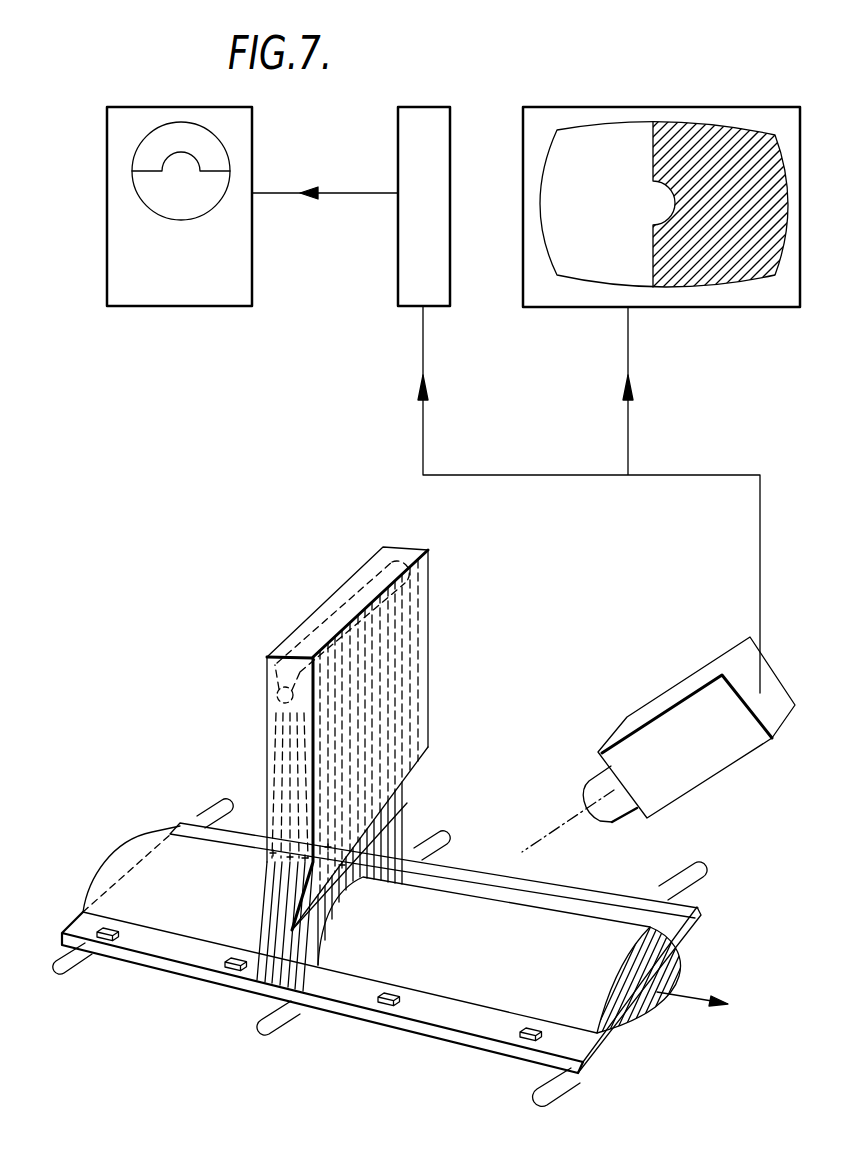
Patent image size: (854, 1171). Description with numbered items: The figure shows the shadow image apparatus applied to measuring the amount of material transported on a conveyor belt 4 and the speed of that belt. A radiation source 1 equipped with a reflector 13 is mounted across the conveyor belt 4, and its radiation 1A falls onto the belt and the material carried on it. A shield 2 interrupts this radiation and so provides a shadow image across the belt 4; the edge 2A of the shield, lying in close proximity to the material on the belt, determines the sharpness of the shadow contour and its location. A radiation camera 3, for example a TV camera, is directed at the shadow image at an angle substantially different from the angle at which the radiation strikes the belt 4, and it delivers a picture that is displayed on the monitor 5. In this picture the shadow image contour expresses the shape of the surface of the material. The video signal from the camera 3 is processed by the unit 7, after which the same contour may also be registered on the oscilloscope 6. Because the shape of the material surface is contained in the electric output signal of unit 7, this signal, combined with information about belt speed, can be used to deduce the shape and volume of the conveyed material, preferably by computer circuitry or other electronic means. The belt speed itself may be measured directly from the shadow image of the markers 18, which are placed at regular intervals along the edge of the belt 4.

The radiation source 1 is at (393, 597).
The air jets 1A is at (258, 917).
The reflector 13 is at (347, 610).
The shield 2 is at (428, 755).
The edge of the shield 2A is at (407, 803).
The radiation camera 3 is at (742, 665).
The conveyor belt 4 is at (190, 922).
The monitor 5 is at (532, 238).
The oscilloscope 6 is at (240, 137).
The unit 7 is at (437, 142).
The markers 18 is at (530, 1034).